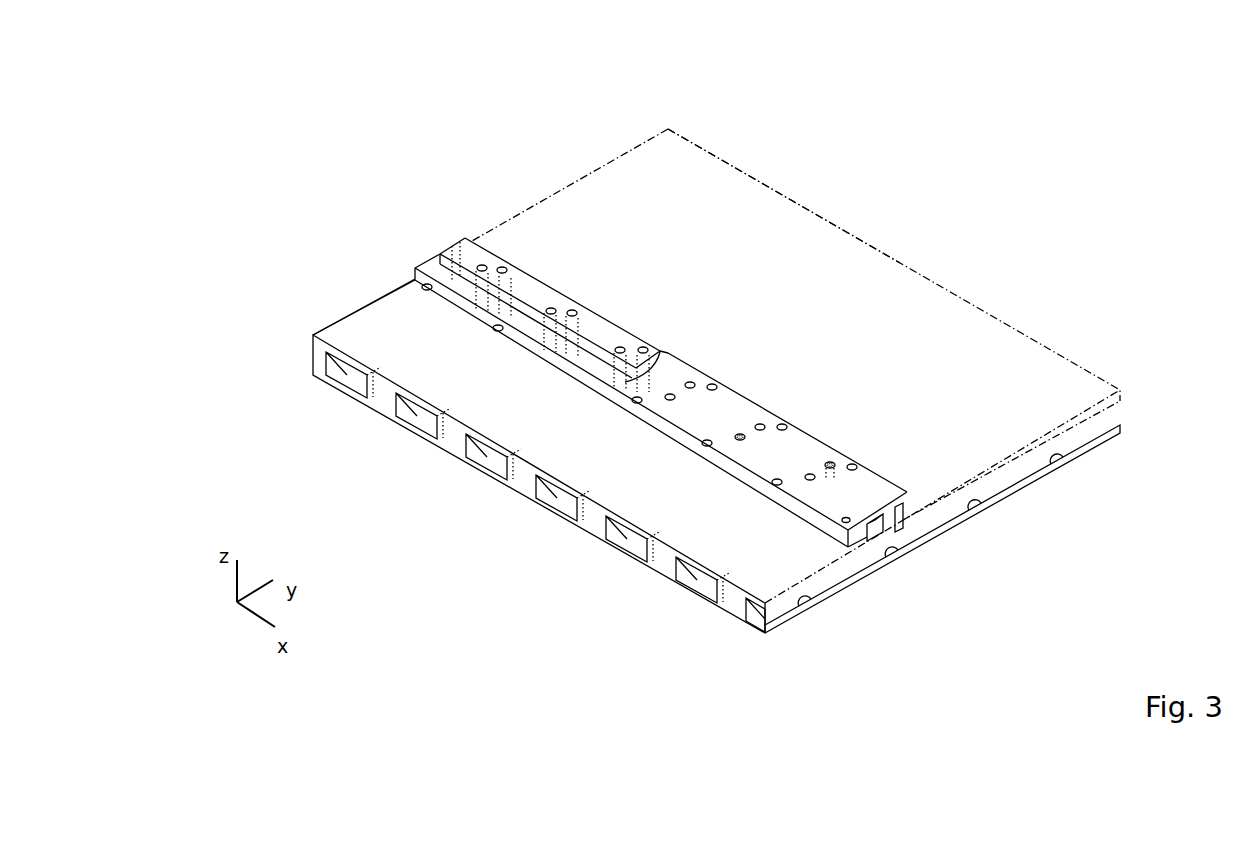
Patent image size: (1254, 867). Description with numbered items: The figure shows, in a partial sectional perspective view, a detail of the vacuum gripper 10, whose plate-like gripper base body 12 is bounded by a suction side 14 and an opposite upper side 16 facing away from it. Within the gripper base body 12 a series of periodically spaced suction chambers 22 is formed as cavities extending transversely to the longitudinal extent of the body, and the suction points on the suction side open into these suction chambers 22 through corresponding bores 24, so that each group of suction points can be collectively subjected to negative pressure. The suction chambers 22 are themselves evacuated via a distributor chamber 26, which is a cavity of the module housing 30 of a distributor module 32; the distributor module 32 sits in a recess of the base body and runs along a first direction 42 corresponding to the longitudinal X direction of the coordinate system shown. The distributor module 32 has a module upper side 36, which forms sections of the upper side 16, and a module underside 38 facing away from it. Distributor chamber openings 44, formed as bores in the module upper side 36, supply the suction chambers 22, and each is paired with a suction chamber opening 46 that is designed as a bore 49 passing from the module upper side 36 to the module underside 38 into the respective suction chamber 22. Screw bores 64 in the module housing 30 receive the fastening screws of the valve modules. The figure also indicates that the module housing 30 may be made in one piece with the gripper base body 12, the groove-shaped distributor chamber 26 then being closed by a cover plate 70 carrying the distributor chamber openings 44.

The vacuum gripper 10 is at (698, 369).
The gripper base body 12 is at (797, 232).
The suction side 14 is at (713, 500).
The upper side 16 is at (554, 170).
The suction chambers 22 is at (349, 378).
The bores 24 is at (805, 607).
The distributor chamber 26 is at (580, 360).
The module housing 30 is at (405, 279).
The distributor module 32 is at (470, 240).
The module upper side 36 is at (718, 381).
The module underside 38 is at (914, 540).
The first direction 42 is at (348, 184).
The distributor chamber openings 44 is at (740, 437).
The suction chamber openings 46 is at (755, 391).
The bores 49 is at (551, 311).
The screw bores 64 is at (502, 270).
The cover plate 70 is at (650, 378).